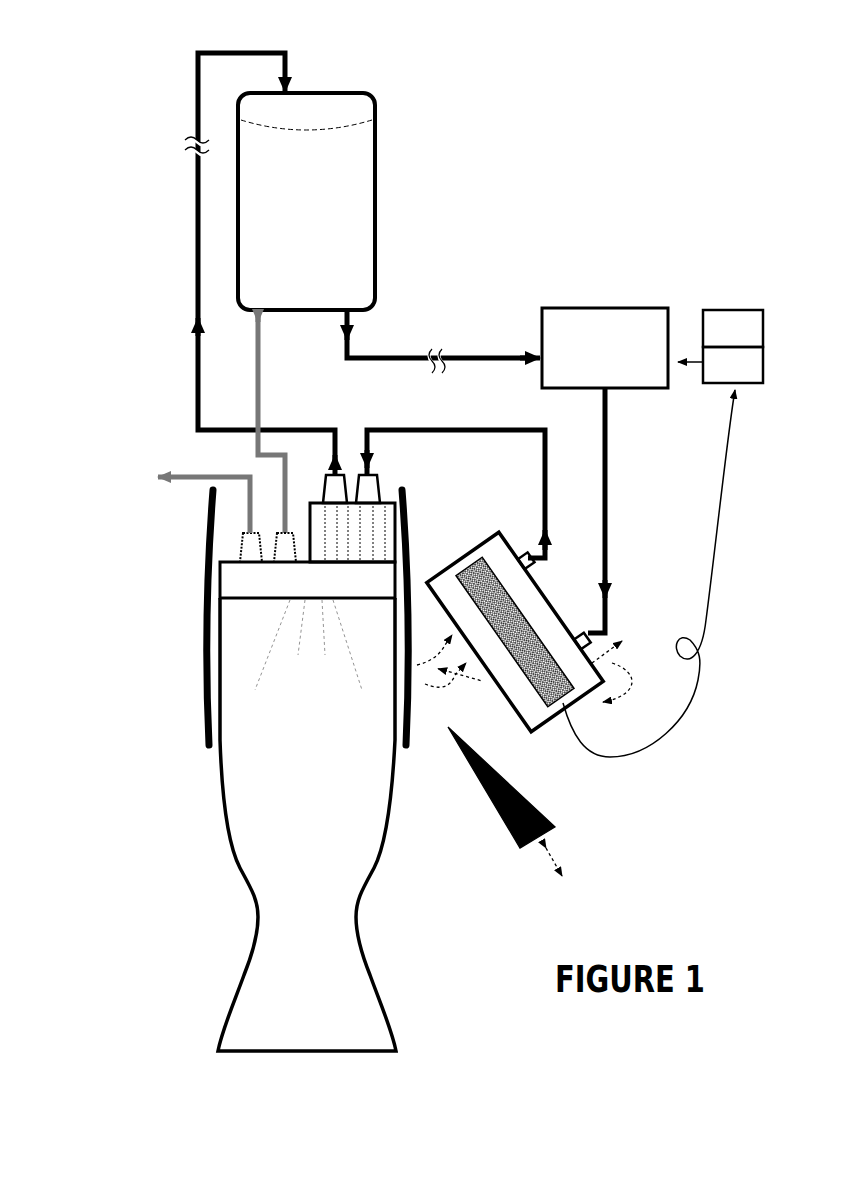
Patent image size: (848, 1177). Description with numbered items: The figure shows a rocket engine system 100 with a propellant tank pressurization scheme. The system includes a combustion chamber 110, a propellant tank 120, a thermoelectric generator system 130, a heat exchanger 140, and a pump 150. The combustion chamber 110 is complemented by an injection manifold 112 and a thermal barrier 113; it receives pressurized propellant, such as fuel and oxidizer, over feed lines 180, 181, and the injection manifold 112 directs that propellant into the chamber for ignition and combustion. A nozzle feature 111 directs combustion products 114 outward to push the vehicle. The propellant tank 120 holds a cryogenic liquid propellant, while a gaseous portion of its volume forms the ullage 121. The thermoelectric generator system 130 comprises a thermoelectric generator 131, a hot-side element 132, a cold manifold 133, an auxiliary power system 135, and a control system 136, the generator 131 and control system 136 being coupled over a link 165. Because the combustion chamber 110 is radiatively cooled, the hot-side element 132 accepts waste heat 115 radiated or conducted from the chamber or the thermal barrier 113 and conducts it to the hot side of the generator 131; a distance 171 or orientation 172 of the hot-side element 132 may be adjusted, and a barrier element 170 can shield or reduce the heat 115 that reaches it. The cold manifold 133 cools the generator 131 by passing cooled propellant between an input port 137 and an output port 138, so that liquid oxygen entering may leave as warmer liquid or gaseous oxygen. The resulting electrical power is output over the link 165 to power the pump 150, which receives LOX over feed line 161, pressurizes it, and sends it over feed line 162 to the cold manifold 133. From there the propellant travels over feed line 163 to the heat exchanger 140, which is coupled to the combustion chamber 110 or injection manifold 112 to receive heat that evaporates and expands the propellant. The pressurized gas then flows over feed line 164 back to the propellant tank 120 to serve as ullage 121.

The rocket engine system 100 is at (116, 43).
The combustion chamber 110 is at (307, 824).
The nozzle feature 111 is at (254, 932).
The injection manifold 112 is at (307, 580).
The thermal barrier 113 is at (206, 753).
The combustion products 114 is at (342, 833).
The waste heat 115 is at (441, 661).
The propellant tank 120 is at (306, 201).
The ullage 121 is at (306, 117).
The thermoelectric generator system 130 is at (499, 613).
The thermoelectric generator 131 is at (511, 606).
The hot-side element 132 is at (503, 615).
The cold manifold 133 is at (521, 573).
The auxiliary power system 135 is at (733, 328).
The control system 136 is at (720, 365).
The input port 137 is at (582, 626).
The output port 138 is at (537, 561).
The heat exchanger 140 is at (352, 518).
The pump 150 is at (605, 348).
The feed line 161 is at (347, 358).
The feed line 162 is at (606, 453).
The feed line 163 is at (542, 451).
The feed line 164 is at (200, 360).
The link 165 is at (722, 476).
The barrier element 170 is at (515, 801).
The distance 171 is at (626, 642).
The orientation 172 is at (630, 692).
The feed line 180 is at (268, 436).
The feed line 181 is at (134, 500).